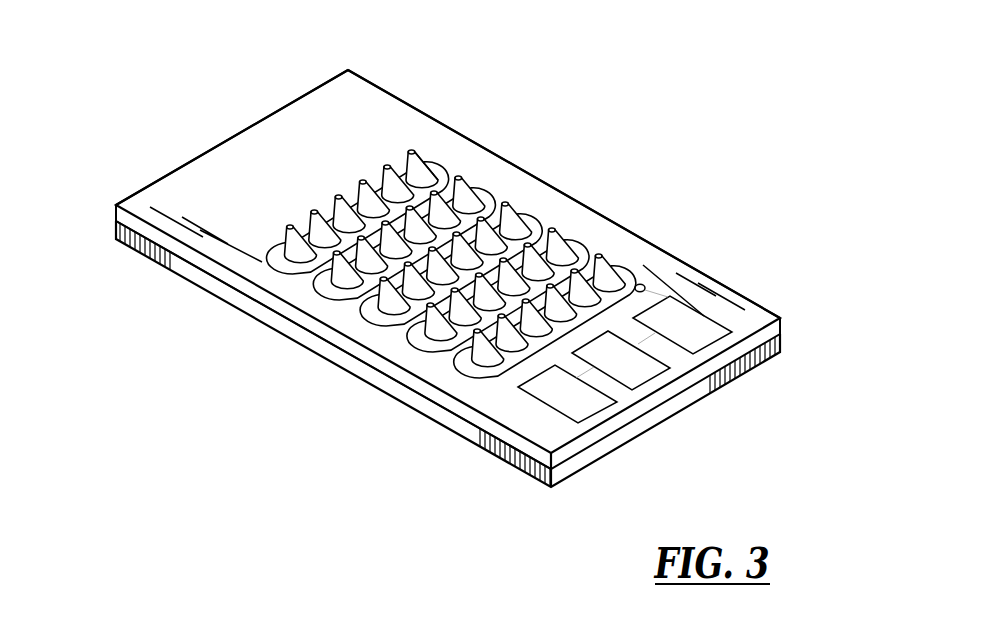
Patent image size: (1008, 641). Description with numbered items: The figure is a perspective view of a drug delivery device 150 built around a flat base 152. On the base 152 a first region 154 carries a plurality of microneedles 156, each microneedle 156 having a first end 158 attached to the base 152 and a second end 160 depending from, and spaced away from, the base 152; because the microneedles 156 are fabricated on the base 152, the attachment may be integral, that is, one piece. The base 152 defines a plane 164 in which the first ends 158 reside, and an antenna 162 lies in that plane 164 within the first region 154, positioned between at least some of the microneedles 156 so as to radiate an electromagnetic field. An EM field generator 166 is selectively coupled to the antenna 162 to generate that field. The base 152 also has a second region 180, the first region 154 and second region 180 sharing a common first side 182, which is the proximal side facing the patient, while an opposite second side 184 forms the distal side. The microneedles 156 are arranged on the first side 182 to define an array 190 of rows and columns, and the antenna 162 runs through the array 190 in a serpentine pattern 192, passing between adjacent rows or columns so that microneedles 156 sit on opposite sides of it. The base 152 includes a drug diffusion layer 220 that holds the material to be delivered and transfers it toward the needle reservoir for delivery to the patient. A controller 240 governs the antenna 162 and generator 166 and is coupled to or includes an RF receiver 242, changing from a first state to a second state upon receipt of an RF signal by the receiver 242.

The drug delivery device 150 is at (461, 247).
The base 152 is at (461, 267).
The first region 154 is at (548, 198).
The microneedles 156 is at (483, 140).
The first end 158 is at (488, 162).
The second end 160 is at (458, 127).
The antenna 162 is at (274, 254).
The plane 164 is at (330, 113).
The EM field generator 166 is at (705, 316).
The second region 180 is at (246, 175).
The first side 182 is at (130, 202).
The second side 184 is at (136, 254).
The array 190 is at (340, 298).
The serpentine pattern 192 is at (456, 382).
The drug diffusion layer 220 is at (228, 278).
The controller 240 is at (642, 376).
The RF receiver 242 is at (580, 412).